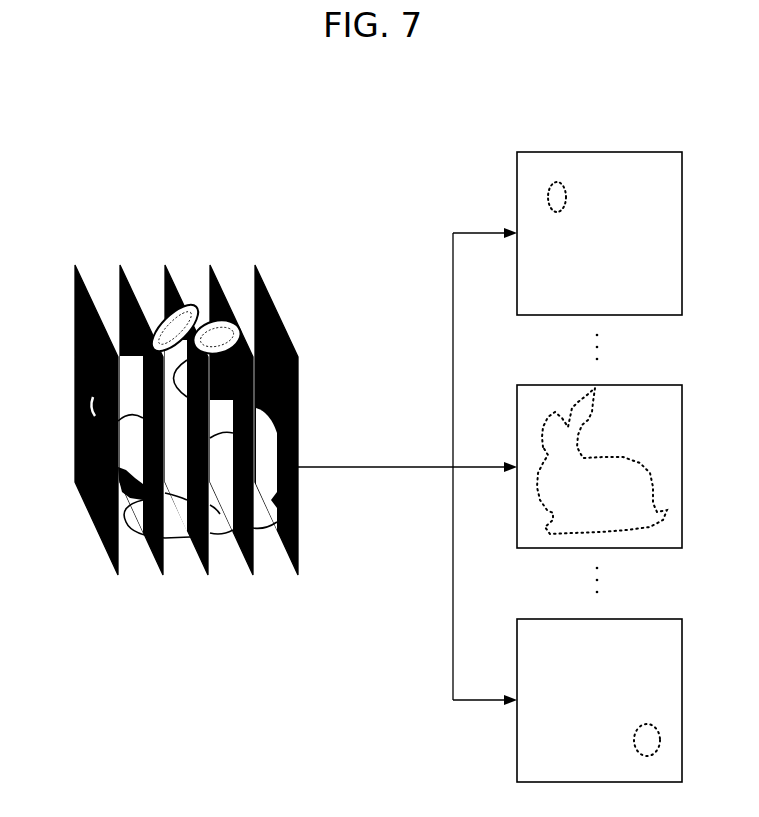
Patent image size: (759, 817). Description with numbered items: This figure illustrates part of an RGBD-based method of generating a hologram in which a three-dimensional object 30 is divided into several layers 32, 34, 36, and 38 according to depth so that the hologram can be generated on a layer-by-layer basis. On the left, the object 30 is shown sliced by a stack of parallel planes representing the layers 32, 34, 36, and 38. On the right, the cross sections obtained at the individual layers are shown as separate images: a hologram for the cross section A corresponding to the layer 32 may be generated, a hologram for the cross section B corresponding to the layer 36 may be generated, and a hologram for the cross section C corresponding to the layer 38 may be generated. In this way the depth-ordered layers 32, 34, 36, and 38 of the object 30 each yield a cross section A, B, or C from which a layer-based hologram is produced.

The 3D object 30 is at (223, 545).
The layer 32 is at (73, 371).
The layer 34 is at (137, 283).
The layer 36 is at (172, 273).
The layer 38 is at (280, 312).
The cross section A is at (556, 178).
The cross section B is at (653, 487).
The cross section C is at (660, 738).